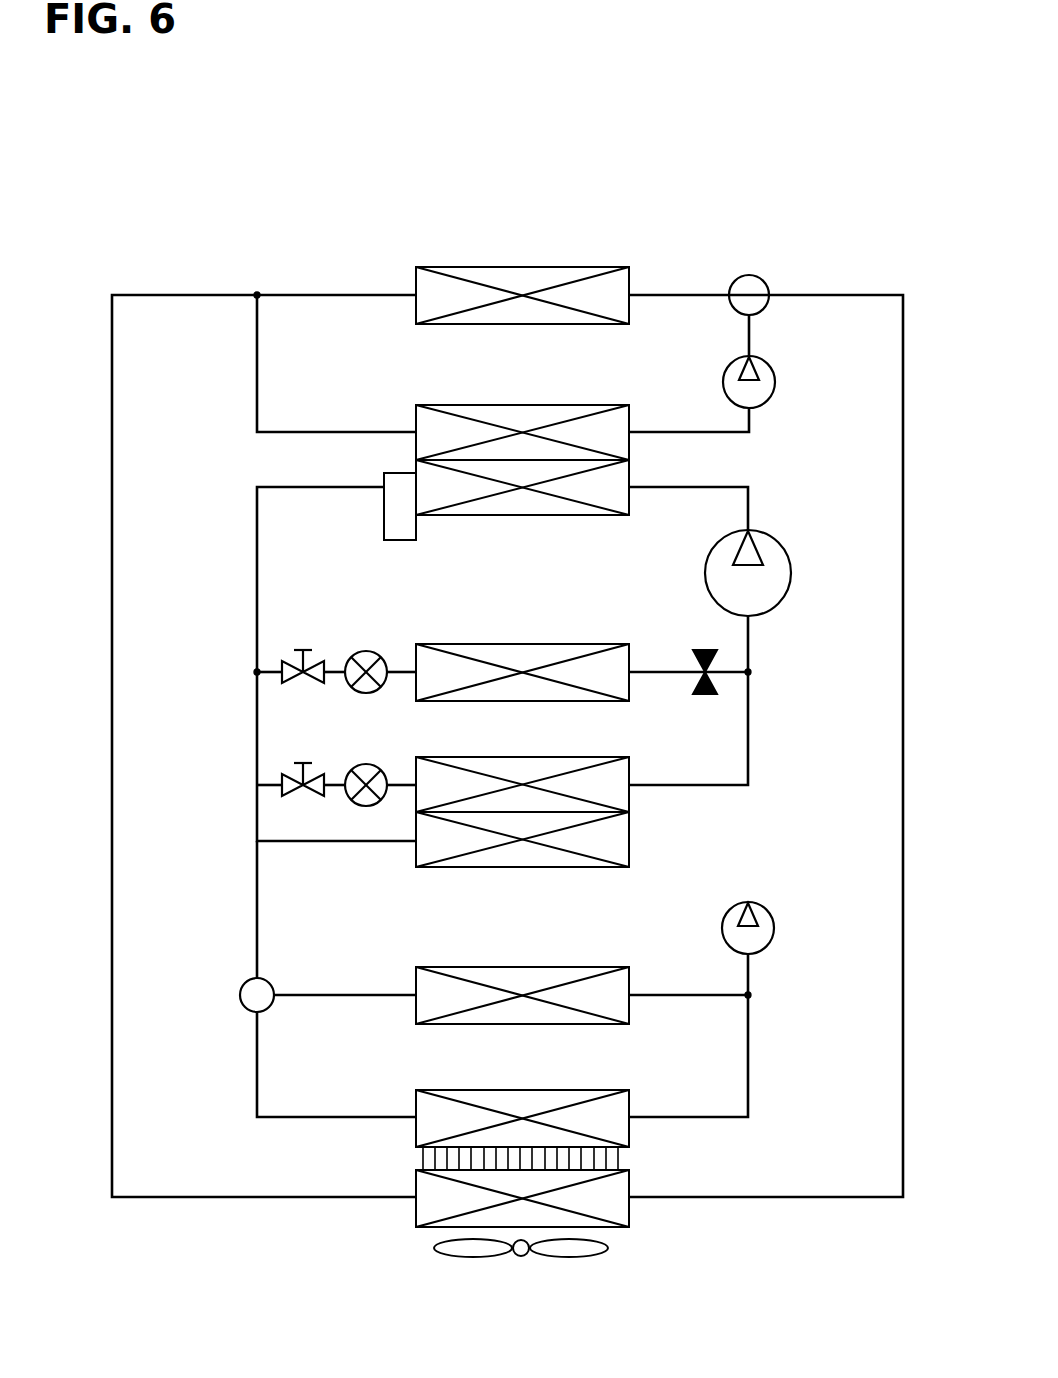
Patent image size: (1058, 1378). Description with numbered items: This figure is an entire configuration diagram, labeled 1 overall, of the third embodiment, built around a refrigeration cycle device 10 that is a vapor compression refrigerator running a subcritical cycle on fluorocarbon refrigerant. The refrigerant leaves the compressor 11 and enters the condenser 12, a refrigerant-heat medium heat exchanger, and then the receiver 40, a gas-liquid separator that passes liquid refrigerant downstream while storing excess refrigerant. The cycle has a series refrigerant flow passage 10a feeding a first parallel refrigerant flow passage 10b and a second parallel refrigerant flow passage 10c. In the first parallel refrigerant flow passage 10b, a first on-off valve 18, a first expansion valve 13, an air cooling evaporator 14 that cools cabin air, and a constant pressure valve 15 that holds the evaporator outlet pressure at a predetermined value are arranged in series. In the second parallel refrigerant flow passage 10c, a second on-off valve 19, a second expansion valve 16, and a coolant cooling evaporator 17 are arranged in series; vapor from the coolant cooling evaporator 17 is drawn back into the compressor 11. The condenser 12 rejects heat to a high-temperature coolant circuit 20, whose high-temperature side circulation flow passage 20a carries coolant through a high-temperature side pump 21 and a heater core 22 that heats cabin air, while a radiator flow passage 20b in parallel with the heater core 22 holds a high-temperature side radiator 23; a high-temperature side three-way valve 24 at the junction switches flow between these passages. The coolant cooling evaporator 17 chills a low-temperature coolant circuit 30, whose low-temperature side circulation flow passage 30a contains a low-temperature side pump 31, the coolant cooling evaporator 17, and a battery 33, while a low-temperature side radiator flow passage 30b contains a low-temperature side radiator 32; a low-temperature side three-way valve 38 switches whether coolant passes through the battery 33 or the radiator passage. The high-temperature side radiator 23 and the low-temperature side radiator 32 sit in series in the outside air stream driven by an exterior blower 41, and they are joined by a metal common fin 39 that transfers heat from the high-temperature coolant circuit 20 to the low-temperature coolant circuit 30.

The thermal management system 1 is at (173, 266).
The refrigeration cycle device 10 is at (447, 647).
The series refrigerant flow passage 10a is at (257, 554).
The first parallel refrigerant flow passage 10b is at (272, 667).
The second parallel refrigerant flow passage 10c is at (276, 797).
The compressor 11 is at (792, 555).
The condenser 12 is at (598, 516).
The first expansion valve 13 is at (366, 650).
The air cooling evaporator 14 is at (508, 643).
The constant pressure valve 15 is at (704, 648).
The second expansion valve 16 is at (366, 764).
The coolant cooling evaporator 17 is at (540, 757).
The first on-off valve 18 is at (303, 648).
The second on-off valve 19 is at (303, 763).
The high-temperature coolant circuit 20 is at (567, 318).
The high-temperature side circulation flow passage 20a is at (327, 300).
The radiator flow passage 20b is at (858, 294).
The high-temperature side pump 21 is at (776, 382).
The heater core 22 is at (520, 326).
The high-temperature side radiator 23 is at (630, 1212).
The high-temperature side three-way valve 24 is at (768, 318).
The low-temperature coolant circuit 30 is at (449, 1008).
The low-temperature side circulation flow passage 30a is at (335, 995).
The low-temperature side radiator flow passage 30b is at (502, 1035).
The low-temperature side pump 31 is at (775, 928).
The low-temperature side radiator 32 is at (528, 1090).
The battery 33 is at (522, 967).
The low-temperature side three-way valve 38 is at (240, 995).
The common fin 39 is at (619, 1157).
The receiver 40 is at (410, 541).
The exterior blower 41 is at (553, 1258).